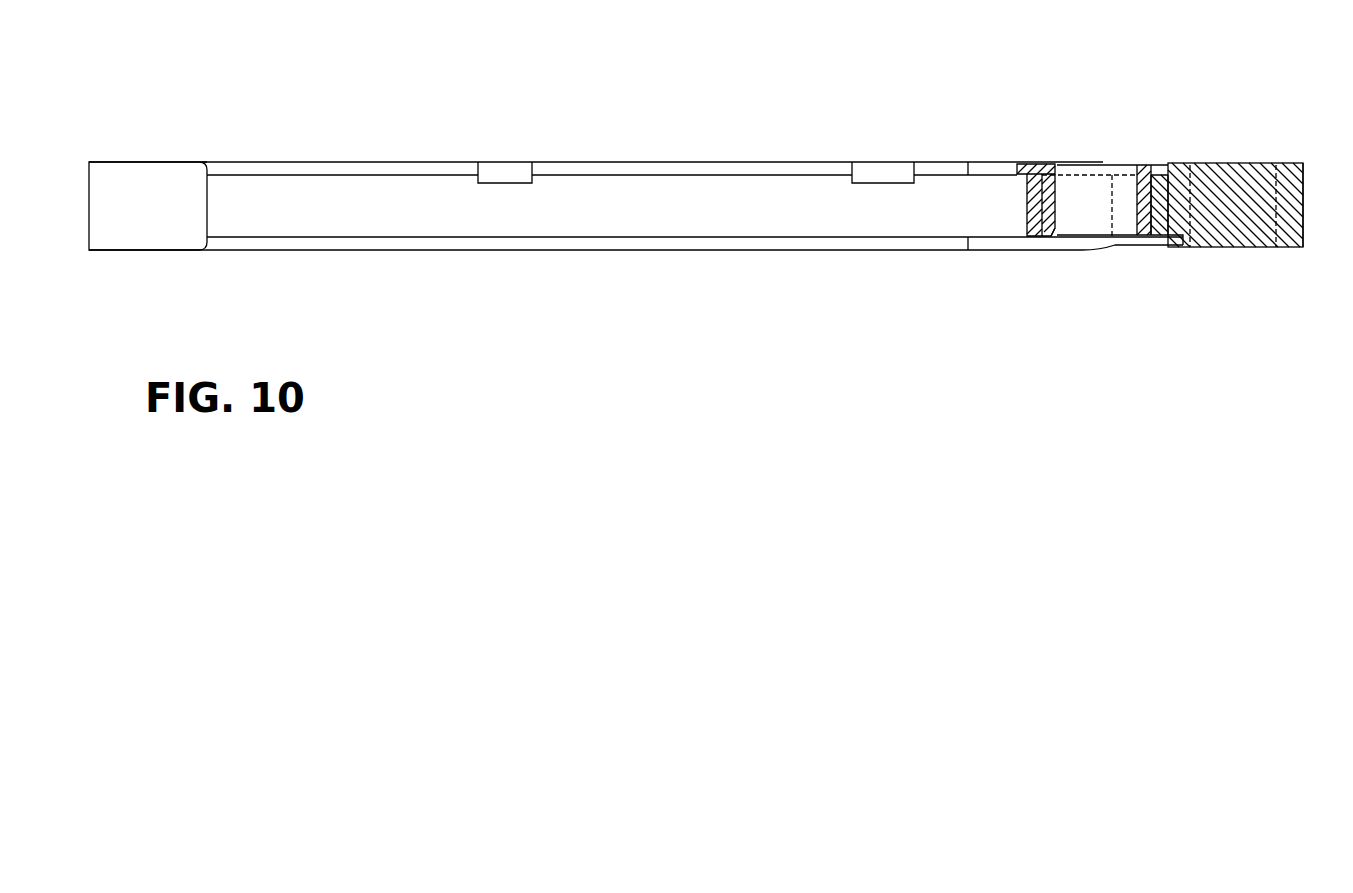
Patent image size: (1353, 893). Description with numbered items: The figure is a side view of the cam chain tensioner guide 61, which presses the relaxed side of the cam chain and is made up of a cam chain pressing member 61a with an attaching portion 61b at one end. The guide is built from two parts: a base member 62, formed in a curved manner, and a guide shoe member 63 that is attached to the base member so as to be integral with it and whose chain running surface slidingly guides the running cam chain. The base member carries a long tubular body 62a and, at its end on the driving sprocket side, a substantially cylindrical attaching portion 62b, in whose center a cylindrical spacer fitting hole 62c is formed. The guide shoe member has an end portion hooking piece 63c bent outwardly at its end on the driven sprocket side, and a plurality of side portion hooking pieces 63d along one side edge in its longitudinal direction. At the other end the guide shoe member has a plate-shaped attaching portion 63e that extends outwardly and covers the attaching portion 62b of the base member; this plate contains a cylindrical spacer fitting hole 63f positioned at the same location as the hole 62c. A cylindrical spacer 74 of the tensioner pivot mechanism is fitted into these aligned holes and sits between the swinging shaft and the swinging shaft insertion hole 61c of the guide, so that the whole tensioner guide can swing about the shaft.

The cam chain tensioner guide 61 is at (745, 69).
The cam chain pressing member 61a is at (333, 161).
The attaching portion 61b is at (1304, 220).
The swinging shaft insertion hole 61c is at (1093, 185).
The base member 62 is at (747, 195).
The inner tube portion 62a is at (618, 222).
The attaching portion 62b is at (1158, 232).
The cylindrical spacer fitting hole 62c is at (1056, 212).
The guide shoe member 63 is at (667, 163).
The end portion hooking piece 63c is at (144, 176).
The side portion hooking pieces 63d is at (513, 170).
The attaching portion 63e is at (1232, 176).
The cylindrical spacer fitting hole 63f is at (1057, 163).
The cylindrical spacer 74 is at (1144, 180).